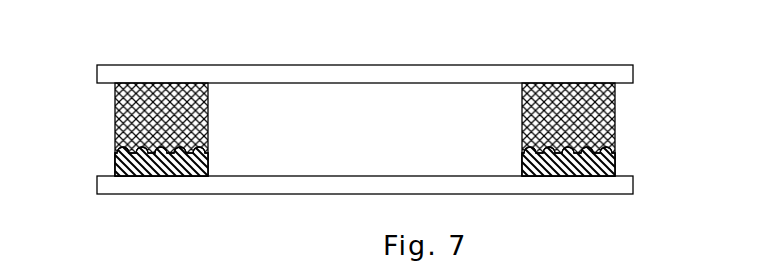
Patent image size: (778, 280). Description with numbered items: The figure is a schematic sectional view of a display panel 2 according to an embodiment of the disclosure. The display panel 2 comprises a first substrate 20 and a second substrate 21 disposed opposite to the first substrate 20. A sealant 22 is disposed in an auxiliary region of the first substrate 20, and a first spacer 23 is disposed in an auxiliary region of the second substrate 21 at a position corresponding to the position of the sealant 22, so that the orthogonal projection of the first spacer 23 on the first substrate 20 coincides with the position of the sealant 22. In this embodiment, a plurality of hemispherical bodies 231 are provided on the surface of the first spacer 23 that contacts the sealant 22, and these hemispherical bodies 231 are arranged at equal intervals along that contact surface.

The display panel 2 is at (86, 58).
The first substrate 20 is at (617, 77).
The second substrate 21 is at (617, 185).
The sealant 22 is at (615, 120).
The first spacer 23 is at (400, 106).
The hemispherical bodies 231 is at (550, 151).